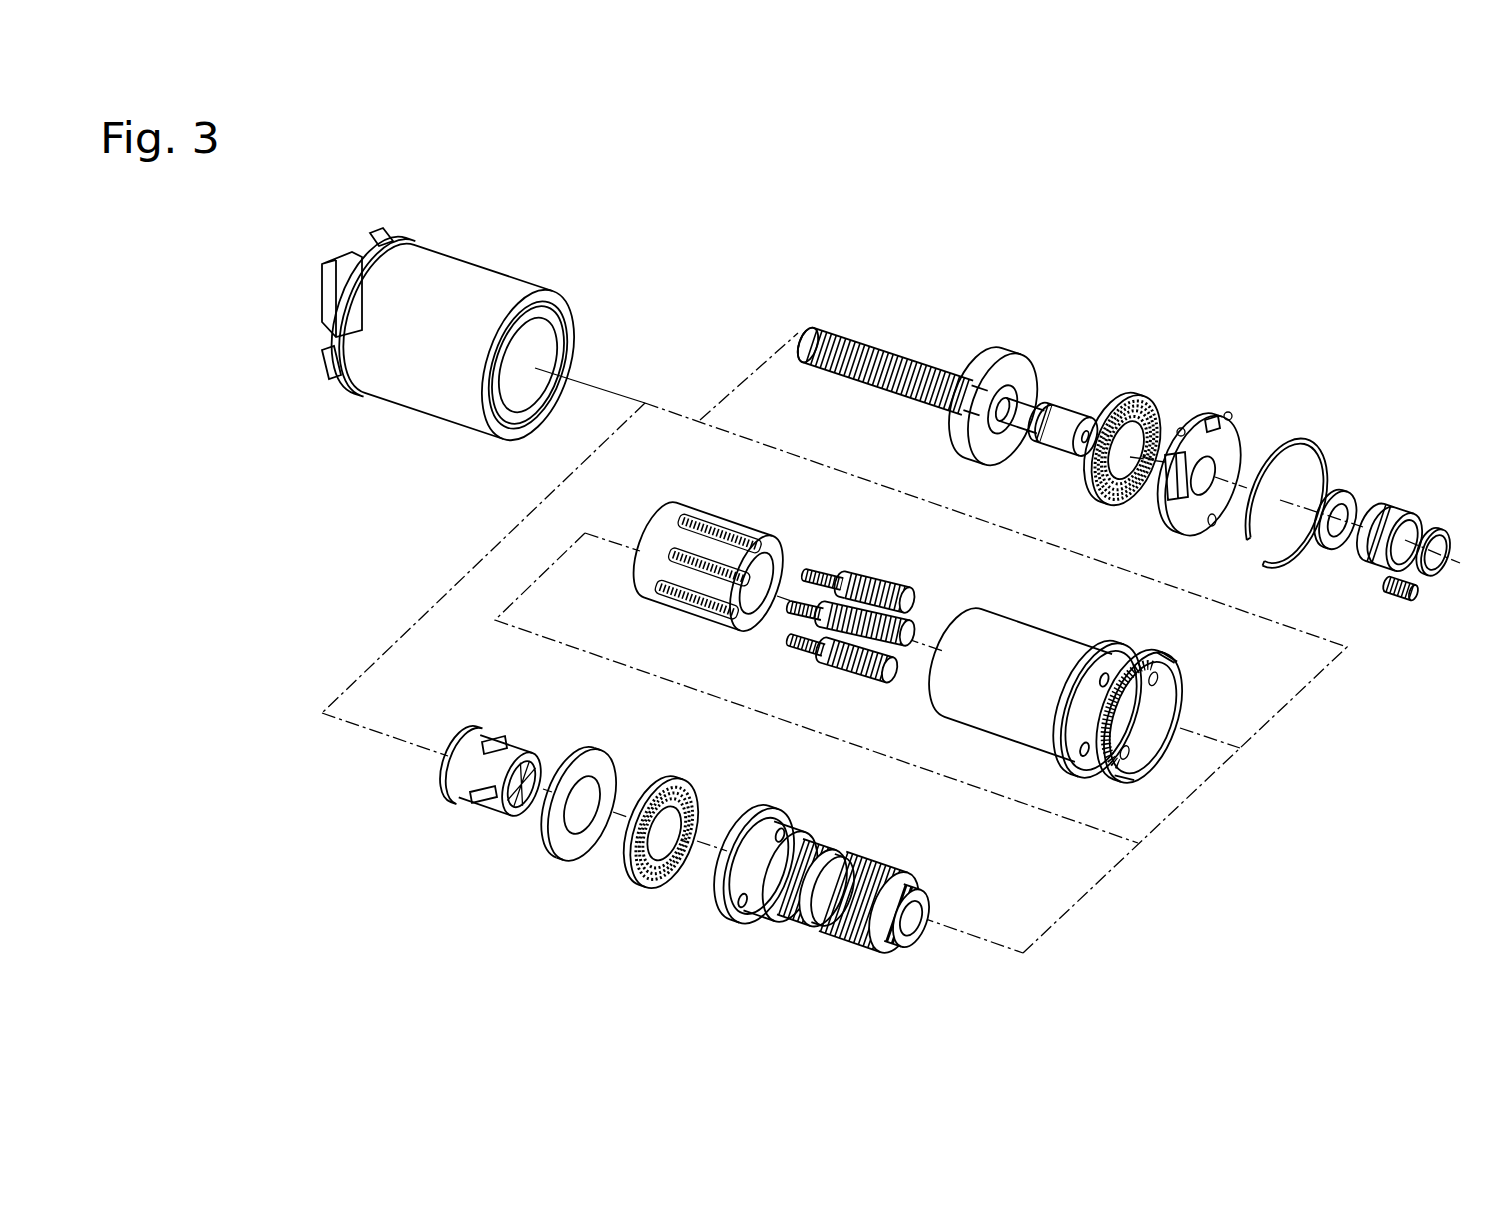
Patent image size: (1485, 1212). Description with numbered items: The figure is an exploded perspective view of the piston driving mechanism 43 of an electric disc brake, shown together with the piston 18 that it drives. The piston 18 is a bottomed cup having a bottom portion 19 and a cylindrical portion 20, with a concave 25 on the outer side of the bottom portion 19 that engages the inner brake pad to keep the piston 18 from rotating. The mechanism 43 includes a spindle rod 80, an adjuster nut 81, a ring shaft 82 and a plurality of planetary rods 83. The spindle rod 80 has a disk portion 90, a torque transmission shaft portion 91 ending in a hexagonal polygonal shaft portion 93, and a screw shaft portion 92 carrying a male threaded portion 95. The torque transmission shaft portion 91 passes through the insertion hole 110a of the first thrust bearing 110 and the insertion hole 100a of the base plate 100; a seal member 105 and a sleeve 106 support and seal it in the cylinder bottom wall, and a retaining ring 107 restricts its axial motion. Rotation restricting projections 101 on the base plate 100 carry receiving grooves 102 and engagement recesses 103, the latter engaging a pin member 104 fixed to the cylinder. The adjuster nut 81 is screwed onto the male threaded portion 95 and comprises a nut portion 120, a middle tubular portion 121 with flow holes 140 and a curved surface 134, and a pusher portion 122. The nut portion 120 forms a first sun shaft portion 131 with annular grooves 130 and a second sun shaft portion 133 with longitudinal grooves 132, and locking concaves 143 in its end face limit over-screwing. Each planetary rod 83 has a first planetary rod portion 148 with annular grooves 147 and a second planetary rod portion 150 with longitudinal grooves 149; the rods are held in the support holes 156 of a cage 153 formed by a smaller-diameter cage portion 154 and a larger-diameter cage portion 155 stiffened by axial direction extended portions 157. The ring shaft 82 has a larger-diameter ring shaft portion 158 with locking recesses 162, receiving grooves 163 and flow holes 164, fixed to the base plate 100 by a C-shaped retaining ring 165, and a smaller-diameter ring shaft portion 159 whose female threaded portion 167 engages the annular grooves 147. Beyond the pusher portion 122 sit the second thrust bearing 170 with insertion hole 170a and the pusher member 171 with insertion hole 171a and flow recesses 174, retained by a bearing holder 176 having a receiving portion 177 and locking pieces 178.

The piston 18 is at (506, 246).
The bottom portion 19 is at (343, 285).
The cylindrical portion 20 is at (425, 397).
The concave 25 is at (323, 330).
The piston driving mechanism 43 is at (1350, 297).
The spindle rod 80 is at (1027, 320).
The adjuster nut 81 is at (860, 935).
The ring shaft 82 is at (1035, 602).
The planetary rods 83 is at (876, 585).
The disk portion 90 is at (1000, 350).
The torque transmission shaft portion 91 is at (1040, 400).
The screw shaft portion 92 is at (810, 340).
The polygonal shaft portion 93 is at (1068, 410).
The male threaded portion 95 is at (850, 330).
The base plate 100 is at (1241, 406).
The insertion hole 100a is at (1255, 440).
The rotation restricting projections 101 is at (1212, 430).
The receiving groove 102 is at (1228, 412).
The engagement recess 103 is at (1213, 526).
The pin member 104 is at (1398, 598).
The seal member 105 is at (1347, 500).
The sleeve 106 is at (1395, 508).
The retaining ring 107 is at (1440, 530).
The first thrust bearing 110 is at (1143, 378).
The insertion hole 110a is at (1118, 420).
The nut portion 120 is at (926, 806).
The middle tubular portion 121 is at (760, 900).
The pusher portion 122 is at (745, 880).
The annular grooves 130 is at (895, 866).
The first sun shaft portion 131 is at (880, 870).
The longitudinal grooves 132 is at (835, 920).
The second sun shaft portion 133 is at (835, 860).
The curved surface 134 is at (795, 905).
The flow holes 140 is at (770, 835).
The locking concaves 143 is at (915, 905).
The annular grooves 147 is at (905, 590).
The first planetary rod portion 148 is at (905, 602).
The longitudinal grooves 149 is at (820, 580).
The second planetary rod portion 150 is at (842, 578).
The cage 153 is at (707, 490).
The smaller-diameter cage portion 154 is at (745, 610).
The larger-diameter cage portion 155 is at (660, 530).
The support holes 156 is at (665, 565).
The axial direction extended portions 157 is at (665, 590).
The larger-diameter ring shaft portion 158 is at (1160, 708).
The smaller-diameter ring shaft portion 159 is at (993, 720).
The locking recesses 162 is at (1170, 670).
The receiving grooves 163 is at (1138, 650).
The flow holes 164 is at (1100, 675).
The retaining ring 165 is at (1312, 432).
The female threaded portion 167 is at (1125, 750).
The second thrust bearing 170 is at (647, 911).
The insertion hole 170a is at (675, 800).
The pusher member 171 is at (567, 881).
The insertion hole 171a is at (600, 790).
The flow recesses 174 is at (555, 745).
The bearing holder 176 is at (478, 815).
The receiving portion 177 is at (470, 730).
The locking pieces 178 is at (510, 745).